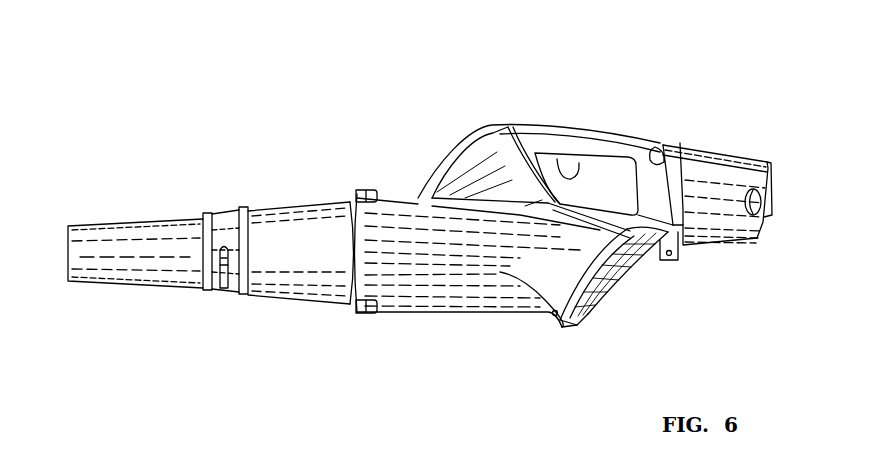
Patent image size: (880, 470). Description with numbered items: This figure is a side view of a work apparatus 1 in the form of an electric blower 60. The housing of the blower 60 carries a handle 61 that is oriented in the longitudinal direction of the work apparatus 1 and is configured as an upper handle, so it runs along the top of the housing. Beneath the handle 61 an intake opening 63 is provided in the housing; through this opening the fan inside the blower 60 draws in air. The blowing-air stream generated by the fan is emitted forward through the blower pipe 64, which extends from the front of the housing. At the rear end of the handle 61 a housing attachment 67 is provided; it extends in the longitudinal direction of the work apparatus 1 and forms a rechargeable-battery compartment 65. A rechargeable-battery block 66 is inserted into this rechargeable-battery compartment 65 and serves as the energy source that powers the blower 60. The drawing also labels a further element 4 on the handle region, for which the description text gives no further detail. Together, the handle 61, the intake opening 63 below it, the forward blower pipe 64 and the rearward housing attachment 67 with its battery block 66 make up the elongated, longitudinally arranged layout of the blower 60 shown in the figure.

The work apparatus 1 is at (357, 137).
The trigger 4 is at (572, 178).
The blower 60 is at (462, 255).
The handle 61 is at (615, 142).
The intake opening 63 is at (628, 275).
The blower pipe 64 is at (122, 245).
The rechargeable-battery compartment 65 is at (768, 172).
The rechargeable-battery block 66 is at (770, 206).
The housing attachment 67 is at (718, 185).